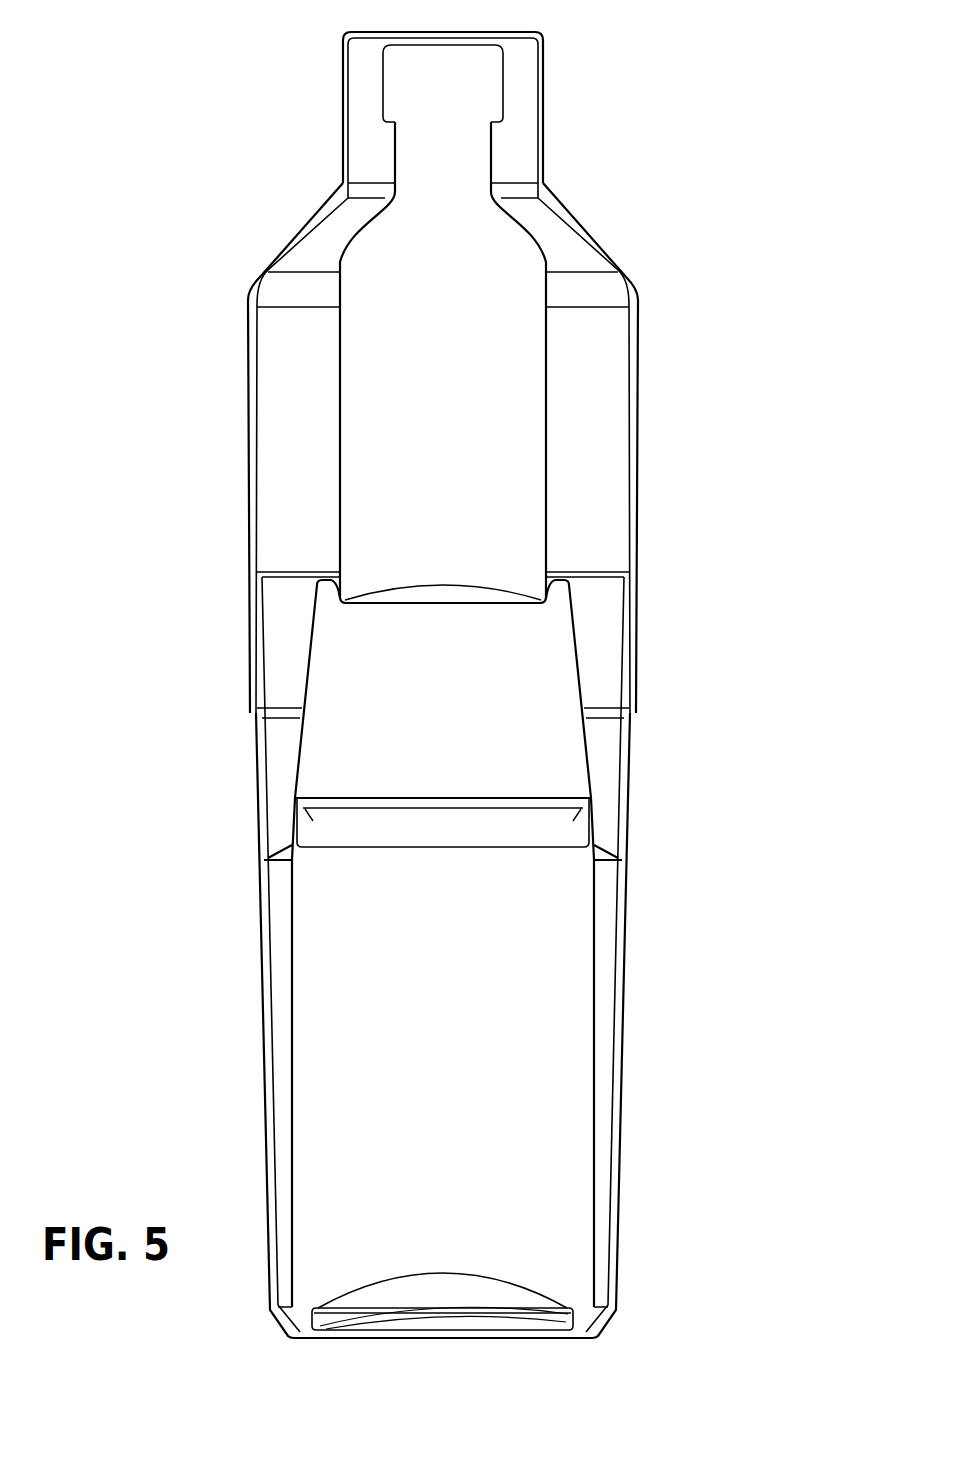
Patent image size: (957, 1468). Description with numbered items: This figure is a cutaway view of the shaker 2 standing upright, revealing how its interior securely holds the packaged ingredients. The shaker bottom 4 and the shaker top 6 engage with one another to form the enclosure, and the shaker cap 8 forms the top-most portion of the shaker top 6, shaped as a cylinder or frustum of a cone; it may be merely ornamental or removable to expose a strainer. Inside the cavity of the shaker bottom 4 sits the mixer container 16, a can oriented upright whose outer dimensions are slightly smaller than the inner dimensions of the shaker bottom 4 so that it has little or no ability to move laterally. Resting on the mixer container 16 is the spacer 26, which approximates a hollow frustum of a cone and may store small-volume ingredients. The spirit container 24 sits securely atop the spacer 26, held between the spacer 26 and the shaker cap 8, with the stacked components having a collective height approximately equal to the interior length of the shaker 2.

The shaker 2 is at (832, 166).
The shaker bottom 4 is at (620, 1010).
The shaker top 6 is at (633, 522).
The shaker cap 8 is at (480, 115).
The mixer container 16 is at (391, 983).
The spirit container 24 is at (484, 508).
The spacer 26 is at (449, 726).